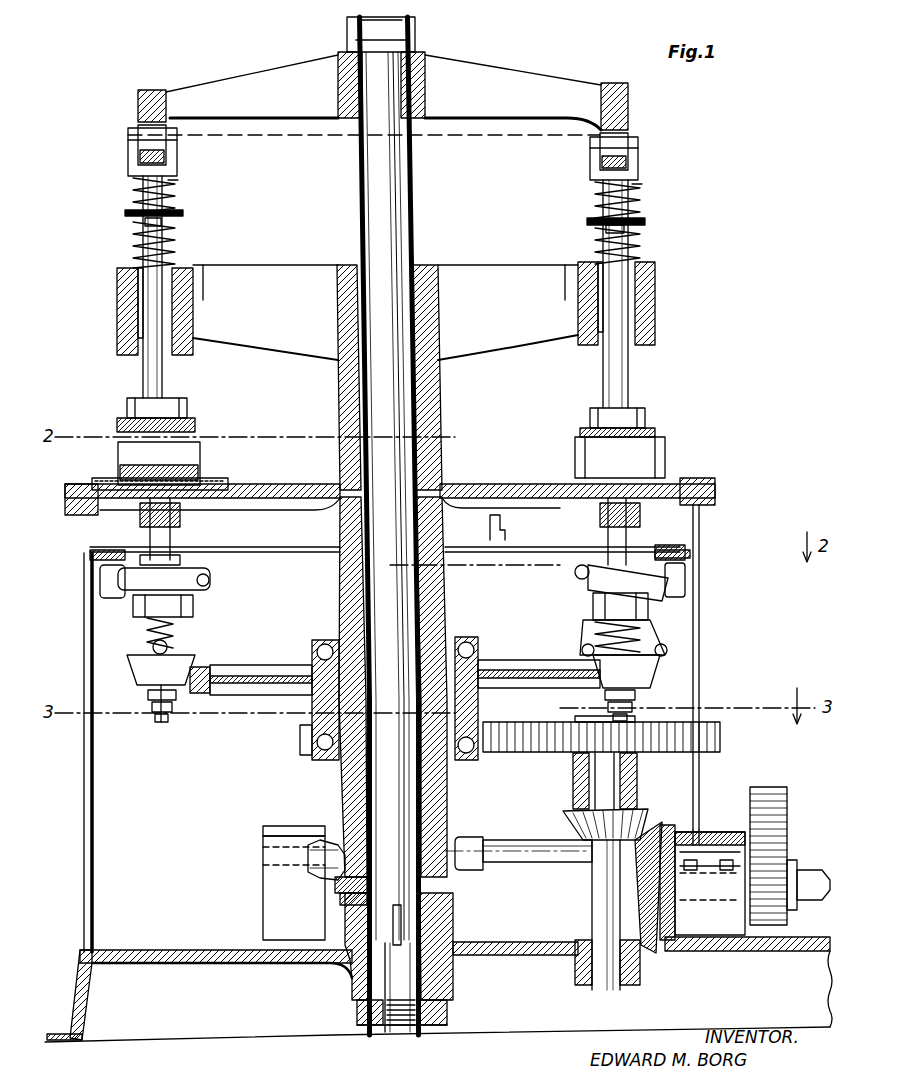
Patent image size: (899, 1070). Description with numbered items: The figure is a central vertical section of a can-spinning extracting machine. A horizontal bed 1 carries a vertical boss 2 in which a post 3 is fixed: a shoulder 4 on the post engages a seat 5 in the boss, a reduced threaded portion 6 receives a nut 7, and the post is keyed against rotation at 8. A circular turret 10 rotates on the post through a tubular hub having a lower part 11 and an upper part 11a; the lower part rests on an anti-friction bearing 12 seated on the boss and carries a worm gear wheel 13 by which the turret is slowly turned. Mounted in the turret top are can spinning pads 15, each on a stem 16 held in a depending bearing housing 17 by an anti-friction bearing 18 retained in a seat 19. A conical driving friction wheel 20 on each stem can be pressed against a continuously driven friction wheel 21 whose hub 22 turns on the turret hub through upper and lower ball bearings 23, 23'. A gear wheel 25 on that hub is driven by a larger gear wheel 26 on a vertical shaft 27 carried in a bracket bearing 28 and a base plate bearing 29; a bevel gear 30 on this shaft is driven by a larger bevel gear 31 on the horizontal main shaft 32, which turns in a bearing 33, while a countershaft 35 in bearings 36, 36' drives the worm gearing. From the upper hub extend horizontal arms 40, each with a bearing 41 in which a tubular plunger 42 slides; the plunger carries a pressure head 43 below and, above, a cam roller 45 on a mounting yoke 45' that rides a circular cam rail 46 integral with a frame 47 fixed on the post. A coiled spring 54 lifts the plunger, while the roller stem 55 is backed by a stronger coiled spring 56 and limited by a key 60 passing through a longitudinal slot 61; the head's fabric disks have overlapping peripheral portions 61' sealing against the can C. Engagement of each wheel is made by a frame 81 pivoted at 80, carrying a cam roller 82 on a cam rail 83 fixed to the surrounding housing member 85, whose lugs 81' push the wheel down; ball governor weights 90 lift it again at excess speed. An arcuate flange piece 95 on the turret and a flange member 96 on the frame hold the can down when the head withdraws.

The bed 1 is at (175, 950).
The boss 2 is at (455, 975).
The post 3 is at (396, 215).
The shoulder 4 is at (357, 1000).
The seat 5 is at (345, 960).
The threaded portion 6 is at (395, 1035).
The nut 7 is at (357, 1027).
The key 8 is at (393, 920).
The turret 10 is at (525, 484).
The hub portion 11 is at (340, 778).
The hub portion 11a is at (340, 385).
The anti-friction bearing 12 is at (263, 898).
The worm gear wheel 13 is at (263, 845).
The can spinning pad 15 is at (215, 518).
The stem 16 is at (200, 553).
The bearing housing 17 is at (215, 578).
The anti-friction bearing 18 is at (508, 525).
The seat 19 is at (572, 550).
The driving friction wheel 20 is at (148, 710).
The friction wheel 21 is at (197, 700).
The hub portion 22 is at (292, 695).
The ball bearings 23 is at (371, 691).
The ball bearings 23' is at (273, 743).
The gear wheel 25 is at (485, 716).
The gear wheel 26 is at (722, 730).
The driven shaft 27 is at (605, 915).
The bracket bearing 28 is at (572, 780).
The base plate bearing 29 is at (632, 985).
The bevel gear 30 is at (570, 818).
The bevel gear 31 is at (592, 868).
The horizontal shaft 32 is at (812, 870).
The supporting bearing 33 is at (715, 880).
The countershaft 35 is at (510, 852).
The bearing 36 is at (716, 806).
The bearing 36' is at (255, 817).
The horizontal arm 40 is at (252, 270).
The bearing 41 is at (117, 300).
The plunger 42 is at (145, 362).
The pressure head 43 is at (130, 410).
The cam roller 45 is at (388, 147).
The mounting yoke 45' is at (417, 155).
The cam rail 46 is at (138, 108).
The frame 47 is at (262, 80).
The coiled spring 54 is at (133, 250).
The stem 55 is at (133, 198).
The coiled spring 56 is at (176, 182).
The key 60 is at (140, 228).
The longitudinal slot 61 is at (370, 216).
The peripheral portion 61' is at (360, 424).
The pivot 80 is at (215, 583).
The frame 81 is at (643, 608).
The lugs 81' is at (364, 613).
The cam roller 82 is at (103, 585).
The cam rail 83 is at (88, 553).
The housing member 85 is at (85, 652).
The ball governor weights 90 is at (580, 650).
The arcuate flange piece 95 is at (200, 478).
The flange member 96 is at (100, 478).
The can C is at (190, 462).